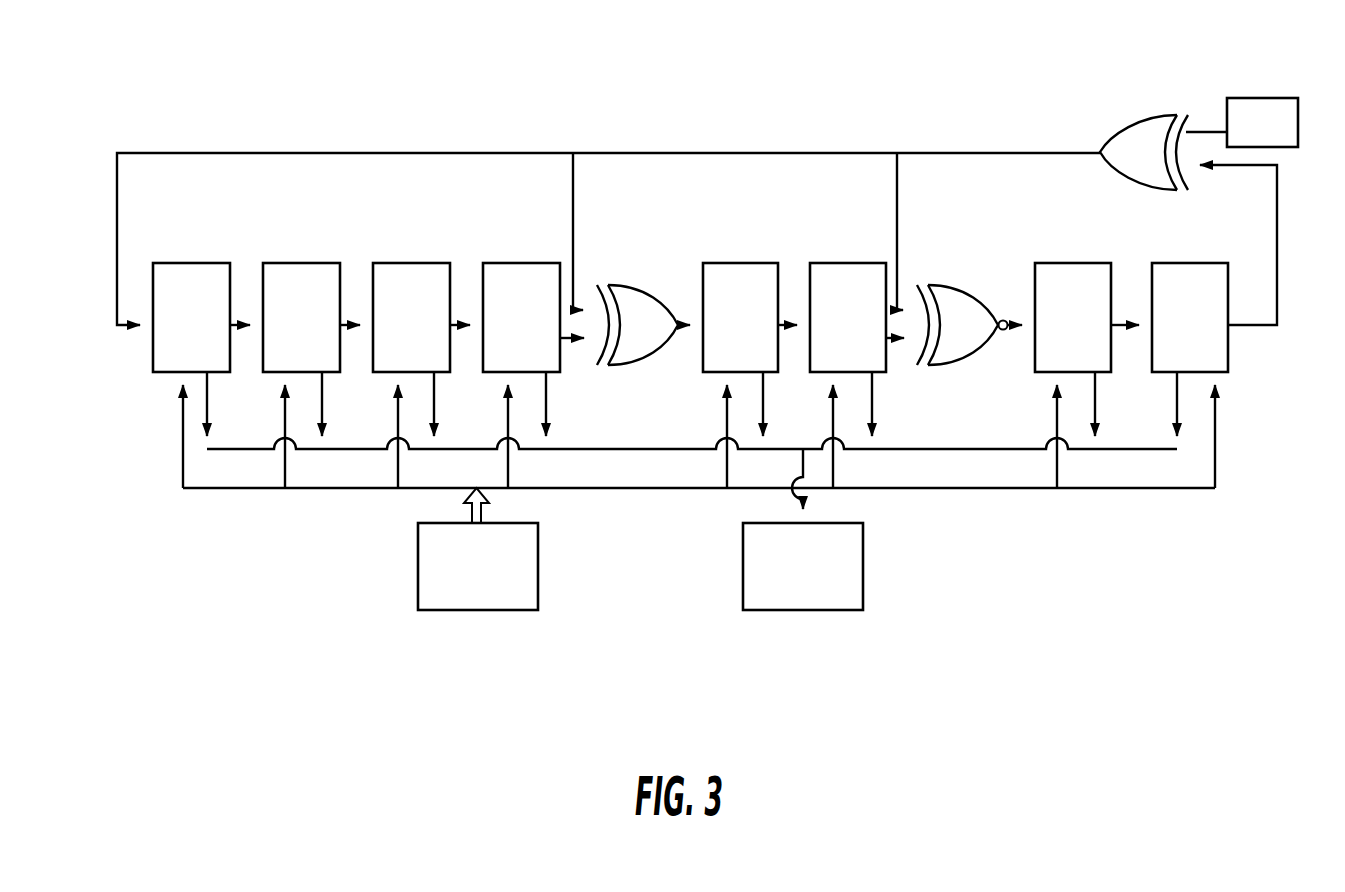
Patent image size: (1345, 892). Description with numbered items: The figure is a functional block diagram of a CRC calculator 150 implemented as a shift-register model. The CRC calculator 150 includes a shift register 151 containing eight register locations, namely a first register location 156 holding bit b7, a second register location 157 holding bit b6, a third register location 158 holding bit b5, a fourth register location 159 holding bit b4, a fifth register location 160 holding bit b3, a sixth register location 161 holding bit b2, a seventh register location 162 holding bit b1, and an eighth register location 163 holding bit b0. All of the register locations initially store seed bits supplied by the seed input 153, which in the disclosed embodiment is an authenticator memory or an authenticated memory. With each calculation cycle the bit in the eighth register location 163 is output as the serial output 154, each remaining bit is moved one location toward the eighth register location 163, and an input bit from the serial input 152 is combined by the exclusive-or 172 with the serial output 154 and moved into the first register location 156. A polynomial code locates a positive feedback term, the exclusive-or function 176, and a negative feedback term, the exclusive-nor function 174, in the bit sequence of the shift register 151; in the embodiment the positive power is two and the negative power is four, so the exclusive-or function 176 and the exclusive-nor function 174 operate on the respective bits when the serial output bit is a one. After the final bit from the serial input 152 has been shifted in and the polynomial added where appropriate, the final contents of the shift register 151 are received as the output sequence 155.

The CRC calculator 150 is at (1208, 680).
The shift register 151 is at (1224, 372).
The serial input 152 is at (1251, 98).
The seed input 153 is at (478, 610).
The serial output 154 is at (1258, 325).
The output sequence 155 is at (807, 610).
The first register location 156 is at (191, 317).
The second register location 157 is at (301, 317).
The third register location 158 is at (411, 317).
The fourth register location 159 is at (521, 317).
The fifth register location 160 is at (740, 317).
The sixth register location 161 is at (848, 317).
The seventh register location 162 is at (1073, 317).
The eighth register location 163 is at (1190, 317).
The exclusive-or 172 is at (1128, 122).
The exclusive-nor function 174 is at (960, 290).
The exclusive-or function 176 is at (641, 289).